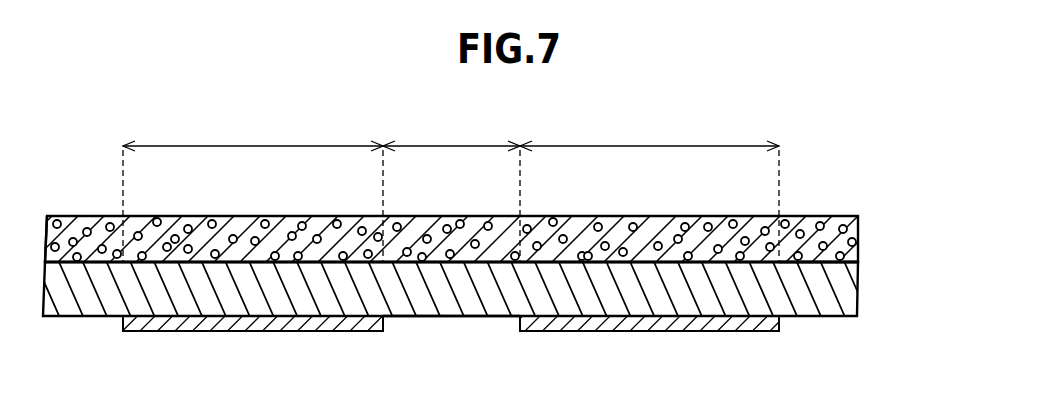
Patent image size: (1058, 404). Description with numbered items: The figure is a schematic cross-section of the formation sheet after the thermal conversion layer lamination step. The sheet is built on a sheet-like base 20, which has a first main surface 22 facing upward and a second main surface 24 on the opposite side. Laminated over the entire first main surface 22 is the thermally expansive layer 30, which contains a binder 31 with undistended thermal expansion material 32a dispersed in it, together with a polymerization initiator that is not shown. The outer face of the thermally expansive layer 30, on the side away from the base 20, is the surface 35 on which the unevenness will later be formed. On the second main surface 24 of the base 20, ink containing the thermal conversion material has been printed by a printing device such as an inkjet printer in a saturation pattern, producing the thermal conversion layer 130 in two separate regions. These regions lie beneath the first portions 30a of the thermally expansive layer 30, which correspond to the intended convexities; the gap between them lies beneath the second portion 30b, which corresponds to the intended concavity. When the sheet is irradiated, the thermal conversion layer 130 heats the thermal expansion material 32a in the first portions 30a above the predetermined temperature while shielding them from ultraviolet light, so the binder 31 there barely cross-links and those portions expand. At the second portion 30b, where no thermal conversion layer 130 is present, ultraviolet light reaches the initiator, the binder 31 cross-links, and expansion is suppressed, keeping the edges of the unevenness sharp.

The base 20 is at (858, 289).
The first main surface 22 is at (800, 273).
The second main surface 24 is at (440, 318).
The thermally expansive layer 30 is at (915, 208).
The first portion 30a is at (451, 190).
The second portion 30b is at (451, 134).
The binder 31 is at (858, 218).
The thermal expansion material 32a is at (858, 258).
The surface 35 is at (73, 215).
The thermal conversion layer 130 is at (374, 333).